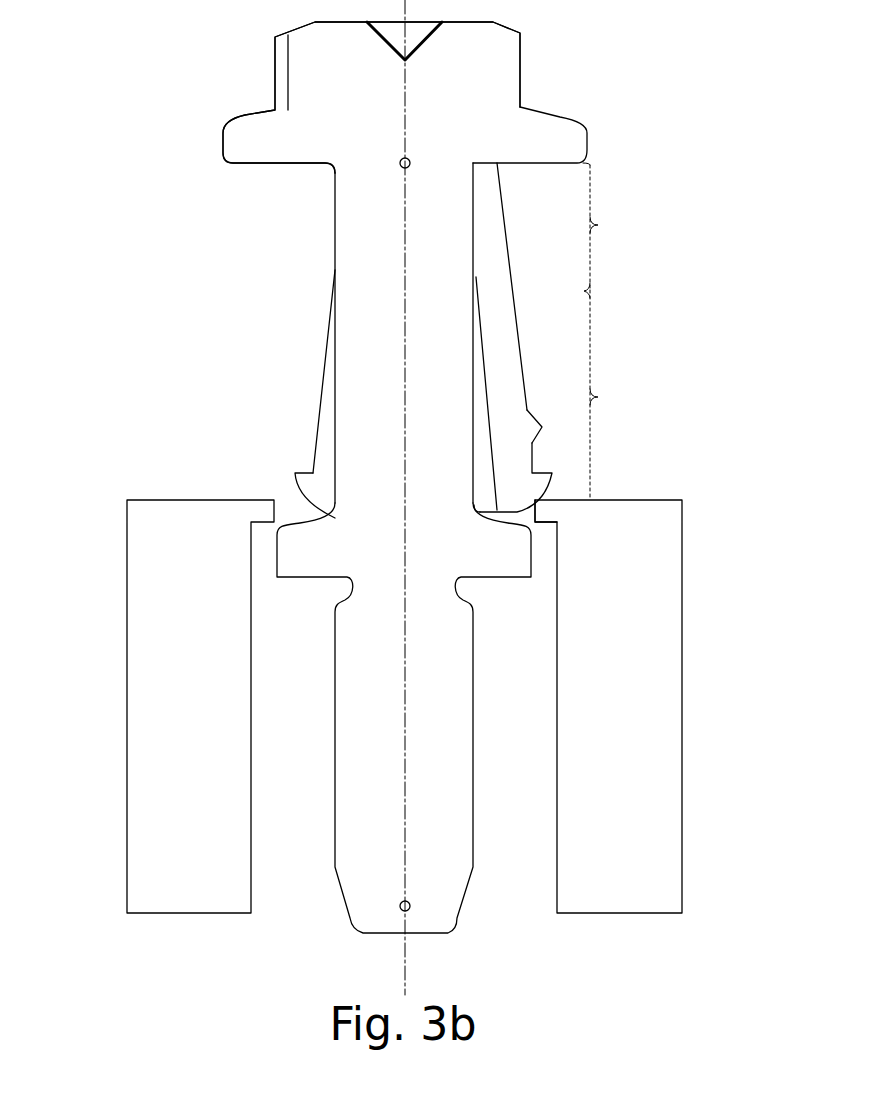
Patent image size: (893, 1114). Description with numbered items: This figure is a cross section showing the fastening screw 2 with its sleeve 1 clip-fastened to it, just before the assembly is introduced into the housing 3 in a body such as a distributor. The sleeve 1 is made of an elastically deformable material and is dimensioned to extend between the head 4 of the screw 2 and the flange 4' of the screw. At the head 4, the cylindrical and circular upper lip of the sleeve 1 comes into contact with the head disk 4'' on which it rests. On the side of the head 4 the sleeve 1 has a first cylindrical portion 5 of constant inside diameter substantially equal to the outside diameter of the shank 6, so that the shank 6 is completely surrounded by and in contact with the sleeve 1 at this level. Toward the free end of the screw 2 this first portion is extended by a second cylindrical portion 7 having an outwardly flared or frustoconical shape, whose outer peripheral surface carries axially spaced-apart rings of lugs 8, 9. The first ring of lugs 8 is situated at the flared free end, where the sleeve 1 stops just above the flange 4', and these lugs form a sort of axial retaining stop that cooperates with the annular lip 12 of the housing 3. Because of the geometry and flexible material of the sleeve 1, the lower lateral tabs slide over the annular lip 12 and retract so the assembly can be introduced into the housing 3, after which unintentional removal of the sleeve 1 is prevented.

The sleeve 1 is at (327, 398).
The fastening screw 2 is at (248, 72).
The housing 3 is at (152, 748).
The head 4 is at (423, 97).
The flange 4' is at (291, 718).
The head disk 4'' is at (578, 142).
The first cylindrical portion 5 is at (602, 230).
The shank 6 is at (357, 257).
The second cylindrical portion 7 is at (612, 394).
The first ring of lugs 8 is at (285, 469).
The second ring of lugs 9 is at (547, 425).
The annular lip 12 is at (547, 508).